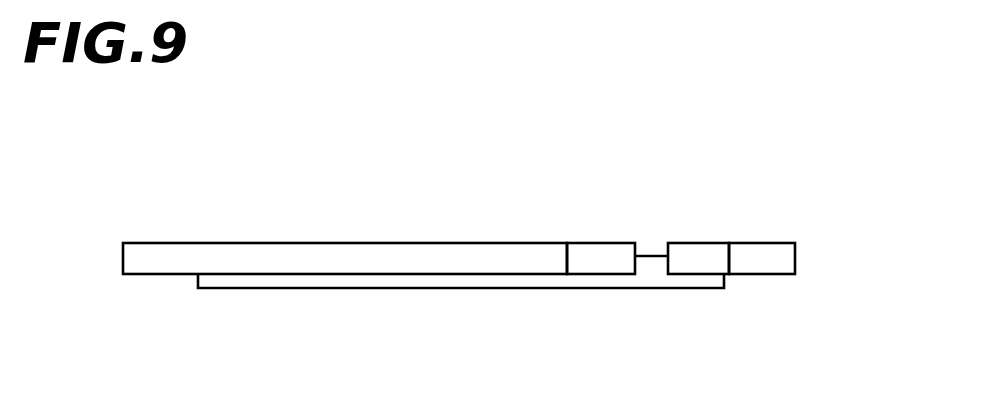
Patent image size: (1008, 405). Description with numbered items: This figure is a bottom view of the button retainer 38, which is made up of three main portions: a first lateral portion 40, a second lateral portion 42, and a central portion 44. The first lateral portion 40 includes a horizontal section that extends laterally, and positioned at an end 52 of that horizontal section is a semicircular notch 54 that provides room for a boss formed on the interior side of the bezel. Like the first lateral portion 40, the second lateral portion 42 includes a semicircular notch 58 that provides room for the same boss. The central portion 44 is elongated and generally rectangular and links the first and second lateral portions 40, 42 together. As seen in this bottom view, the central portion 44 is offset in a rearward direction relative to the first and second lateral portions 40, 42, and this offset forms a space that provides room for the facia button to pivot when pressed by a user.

The button retainer 38 is at (856, 142).
The first lateral portion 40 is at (160, 265).
The second lateral portion 42 is at (765, 263).
The central portion 44 is at (408, 283).
The end 52 is at (647, 185).
The semicircular notch 54 is at (597, 255).
The semicircular notch 58 is at (707, 255).